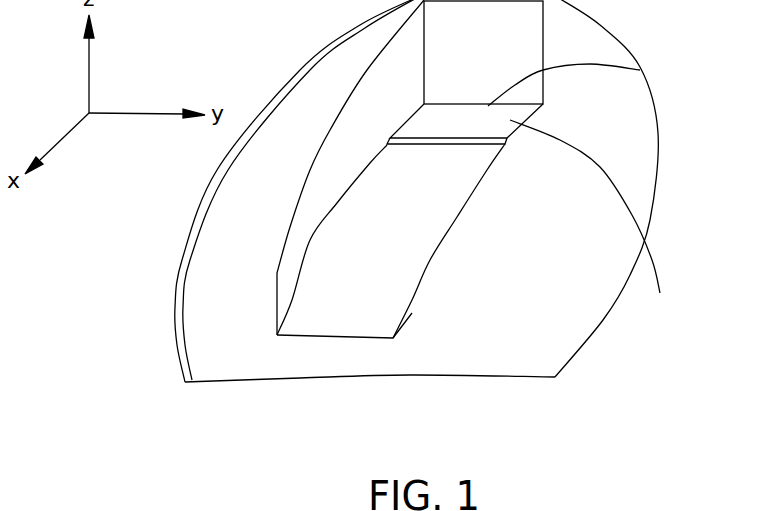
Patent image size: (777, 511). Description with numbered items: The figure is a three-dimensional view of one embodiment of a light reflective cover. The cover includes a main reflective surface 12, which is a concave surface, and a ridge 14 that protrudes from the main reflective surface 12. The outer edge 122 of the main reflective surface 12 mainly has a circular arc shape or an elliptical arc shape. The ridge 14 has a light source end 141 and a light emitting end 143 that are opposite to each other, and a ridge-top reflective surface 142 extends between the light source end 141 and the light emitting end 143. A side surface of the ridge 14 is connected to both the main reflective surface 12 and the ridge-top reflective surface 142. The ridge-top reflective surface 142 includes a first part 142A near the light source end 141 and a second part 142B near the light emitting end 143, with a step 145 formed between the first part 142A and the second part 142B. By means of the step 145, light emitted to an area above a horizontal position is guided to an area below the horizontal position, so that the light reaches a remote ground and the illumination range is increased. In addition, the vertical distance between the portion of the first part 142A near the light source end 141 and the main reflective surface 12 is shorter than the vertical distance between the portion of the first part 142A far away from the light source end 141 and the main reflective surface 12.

The main reflective surface 12 is at (642, 143).
The outer edge 122 is at (193, 250).
The ridge 14 is at (543, 38).
The light source end 141 is at (308, 338).
The ridge-top reflective surface 142 is at (303, 303).
The first part 142A is at (420, 240).
The second part 142B is at (595, 226).
The light emitting end 143 is at (640, 70).
The step 145 is at (415, 137).